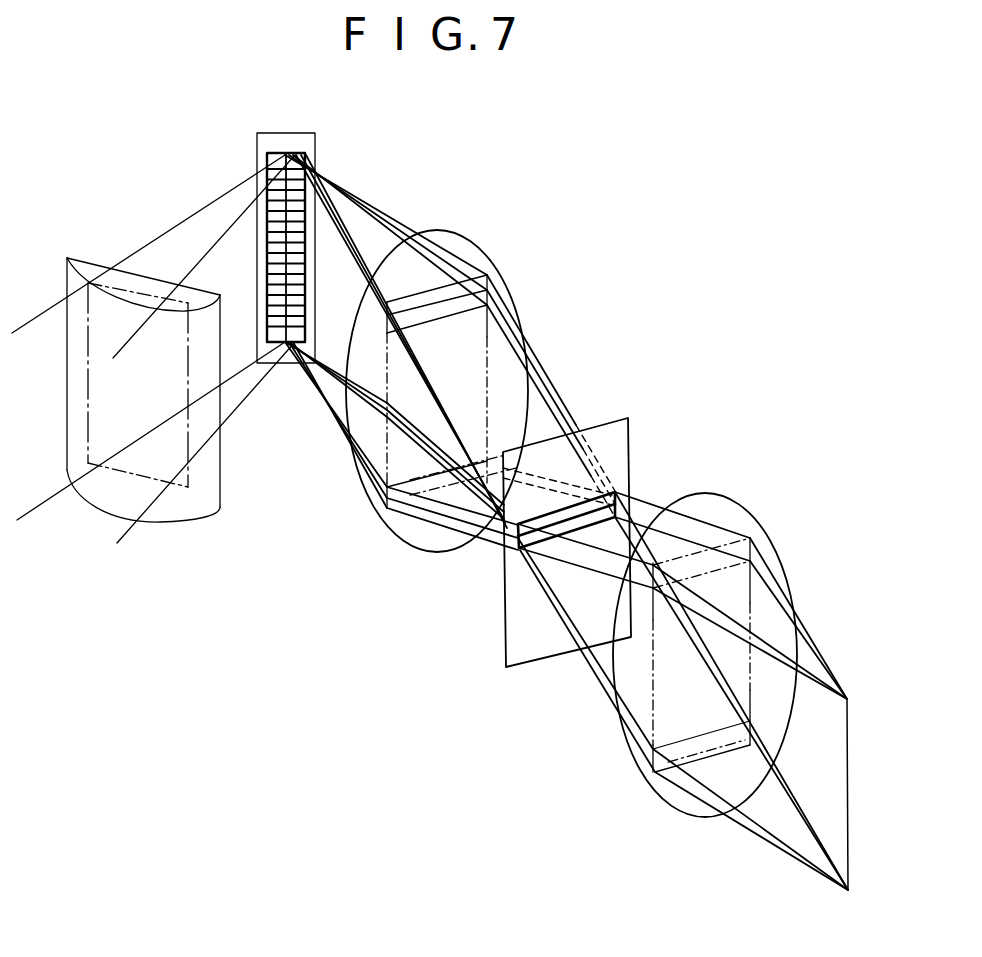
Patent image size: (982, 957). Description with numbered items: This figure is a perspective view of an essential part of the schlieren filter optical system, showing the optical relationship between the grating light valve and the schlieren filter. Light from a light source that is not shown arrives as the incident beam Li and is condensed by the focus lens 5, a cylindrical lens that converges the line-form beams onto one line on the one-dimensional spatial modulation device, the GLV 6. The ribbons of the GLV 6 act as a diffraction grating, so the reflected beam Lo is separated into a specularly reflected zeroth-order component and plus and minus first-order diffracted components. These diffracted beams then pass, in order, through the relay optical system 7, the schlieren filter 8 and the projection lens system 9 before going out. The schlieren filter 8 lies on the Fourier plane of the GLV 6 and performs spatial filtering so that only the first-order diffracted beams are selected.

The focus lens 5 is at (80, 262).
The grating light valve (GLV) 6 is at (253, 157).
The relay optical system 7 is at (492, 263).
The schlieren filter 8 is at (632, 430).
The projection lens system 9 is at (760, 527).
The incident beam Li is at (178, 219).
The reflected beam Lo is at (566, 506).